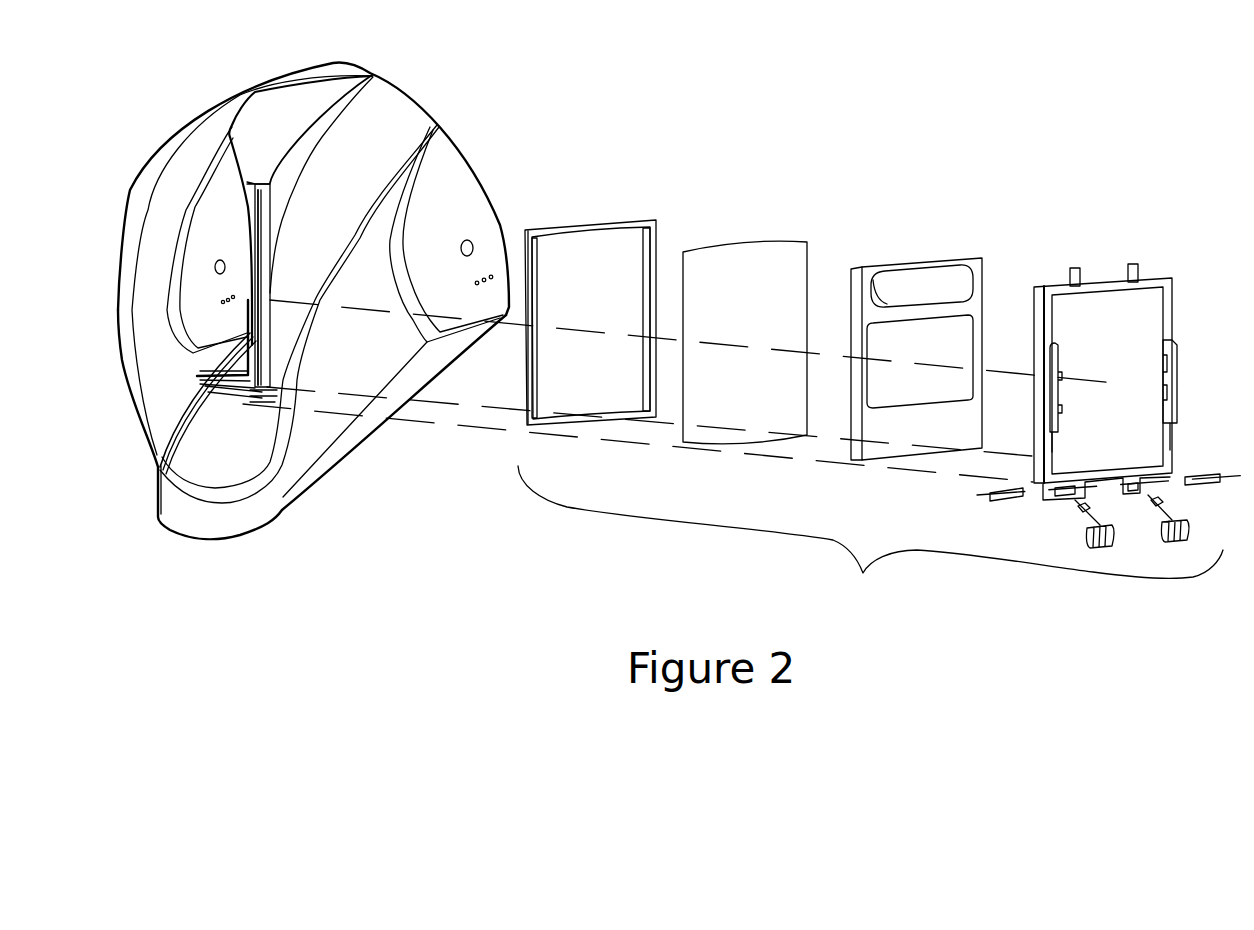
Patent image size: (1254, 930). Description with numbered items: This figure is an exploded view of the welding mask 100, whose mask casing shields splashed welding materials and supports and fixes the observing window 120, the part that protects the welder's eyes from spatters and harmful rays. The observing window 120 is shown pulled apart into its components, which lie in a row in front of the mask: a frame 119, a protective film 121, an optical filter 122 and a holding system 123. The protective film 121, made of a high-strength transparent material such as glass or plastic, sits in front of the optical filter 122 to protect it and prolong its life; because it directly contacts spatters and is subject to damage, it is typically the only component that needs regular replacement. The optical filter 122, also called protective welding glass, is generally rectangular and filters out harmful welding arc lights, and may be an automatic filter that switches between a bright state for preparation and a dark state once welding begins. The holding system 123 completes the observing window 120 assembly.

The welding mask 100 is at (478, 90).
The frame 119 is at (590, 223).
The observing window 120 is at (870, 537).
The protective film 121 is at (747, 242).
The optical filter 122 is at (915, 260).
The holding system 123 is at (1158, 272).